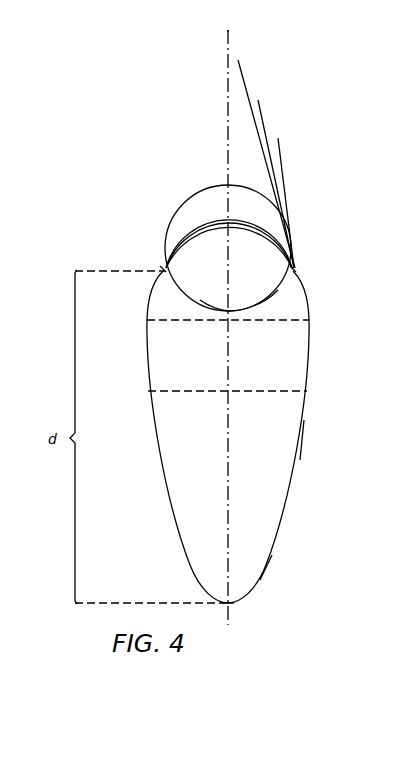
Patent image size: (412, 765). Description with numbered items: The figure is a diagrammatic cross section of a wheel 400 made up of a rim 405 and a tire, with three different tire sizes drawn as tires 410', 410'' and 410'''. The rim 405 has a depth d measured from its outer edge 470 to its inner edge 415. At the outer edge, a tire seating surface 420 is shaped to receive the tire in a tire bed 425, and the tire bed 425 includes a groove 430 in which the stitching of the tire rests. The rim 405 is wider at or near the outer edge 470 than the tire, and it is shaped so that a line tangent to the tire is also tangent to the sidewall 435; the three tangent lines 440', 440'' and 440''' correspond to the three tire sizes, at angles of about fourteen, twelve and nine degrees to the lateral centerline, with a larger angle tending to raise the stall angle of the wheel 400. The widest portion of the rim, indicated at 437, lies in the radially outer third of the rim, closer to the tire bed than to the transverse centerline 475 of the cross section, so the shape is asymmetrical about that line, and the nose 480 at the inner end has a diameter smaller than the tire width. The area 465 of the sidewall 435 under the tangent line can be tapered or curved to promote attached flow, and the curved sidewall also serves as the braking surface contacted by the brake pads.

The wheel 400 is at (80, 103).
The rim 405 is at (148, 356).
The tire 410' is at (196, 230).
The tire 410'' is at (203, 215).
The tire 410''' is at (229, 197).
The inner edge 415 is at (232, 607).
The tire seating surface 420 is at (262, 290).
The tire bed 425 is at (262, 308).
The groove 430 is at (210, 308).
The sidewall 435 is at (305, 436).
The widest portion of rim 437 is at (205, 326).
The tangent line 440' is at (317, 199).
The tangent line 440'' is at (301, 178).
The tangent line 440''' is at (283, 158).
The area of sidewall under the tangent line 465 is at (297, 268).
The outer edge 470 is at (162, 268).
The centerline 475 is at (205, 394).
The nose 480 is at (271, 571).